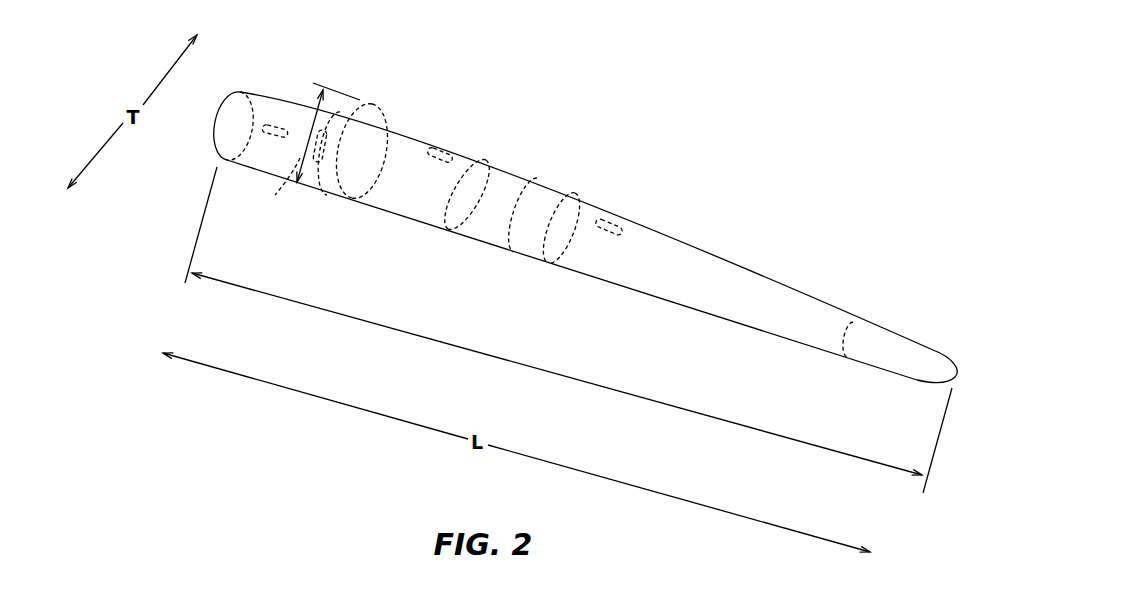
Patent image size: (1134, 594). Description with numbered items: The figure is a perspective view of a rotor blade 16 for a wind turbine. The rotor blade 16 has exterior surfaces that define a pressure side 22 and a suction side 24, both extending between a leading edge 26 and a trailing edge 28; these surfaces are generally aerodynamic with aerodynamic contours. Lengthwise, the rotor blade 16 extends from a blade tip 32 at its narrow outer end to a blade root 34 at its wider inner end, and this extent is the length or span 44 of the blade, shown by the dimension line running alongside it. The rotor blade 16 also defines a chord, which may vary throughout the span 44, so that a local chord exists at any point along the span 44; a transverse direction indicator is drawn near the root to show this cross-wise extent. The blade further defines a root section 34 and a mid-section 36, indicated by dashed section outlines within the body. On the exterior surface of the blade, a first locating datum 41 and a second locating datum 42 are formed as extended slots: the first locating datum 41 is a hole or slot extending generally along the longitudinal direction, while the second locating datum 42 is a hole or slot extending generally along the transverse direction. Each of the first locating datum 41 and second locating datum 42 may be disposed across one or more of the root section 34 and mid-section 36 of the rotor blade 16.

The rotor blade 16 is at (589, 217).
The pressure side 22 is at (433, 132).
The suction side 24 is at (376, 118).
The leading edge 26 is at (407, 219).
The trailing edge 28 is at (458, 140).
The blade tip 32 is at (957, 373).
The blade root 34 is at (217, 117).
The mid-section 36 is at (489, 237).
The first locating datum 41 is at (268, 136).
The second locating datum 42 is at (313, 130).
The span 44 is at (447, 343).